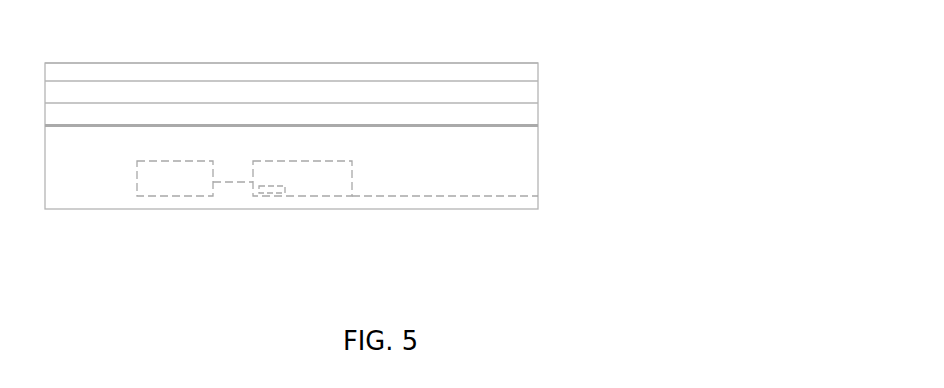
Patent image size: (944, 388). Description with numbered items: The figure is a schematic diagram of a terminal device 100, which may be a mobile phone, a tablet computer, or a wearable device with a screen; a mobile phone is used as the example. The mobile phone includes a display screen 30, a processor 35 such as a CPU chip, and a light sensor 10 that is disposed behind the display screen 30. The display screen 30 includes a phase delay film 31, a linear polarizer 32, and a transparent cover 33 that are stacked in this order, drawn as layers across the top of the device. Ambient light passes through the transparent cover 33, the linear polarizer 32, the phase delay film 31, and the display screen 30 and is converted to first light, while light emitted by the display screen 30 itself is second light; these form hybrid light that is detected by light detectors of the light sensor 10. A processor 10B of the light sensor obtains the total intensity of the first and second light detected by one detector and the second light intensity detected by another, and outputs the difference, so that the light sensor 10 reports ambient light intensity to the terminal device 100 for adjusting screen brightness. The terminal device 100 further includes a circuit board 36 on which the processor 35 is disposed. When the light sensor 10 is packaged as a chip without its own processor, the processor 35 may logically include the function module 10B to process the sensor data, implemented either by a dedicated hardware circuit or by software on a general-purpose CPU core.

The display screen 30 is at (295, 62).
The phase delay film 31 is at (512, 117).
The linear polarizer 32 is at (512, 95).
The transparent cover 33 is at (495, 75).
The terminal device 100 is at (560, 152).
The light sensor 10 is at (185, 196).
The processor of the light sensor 10B is at (265, 194).
The processor 35 is at (300, 187).
The circuit board 36 is at (448, 197).